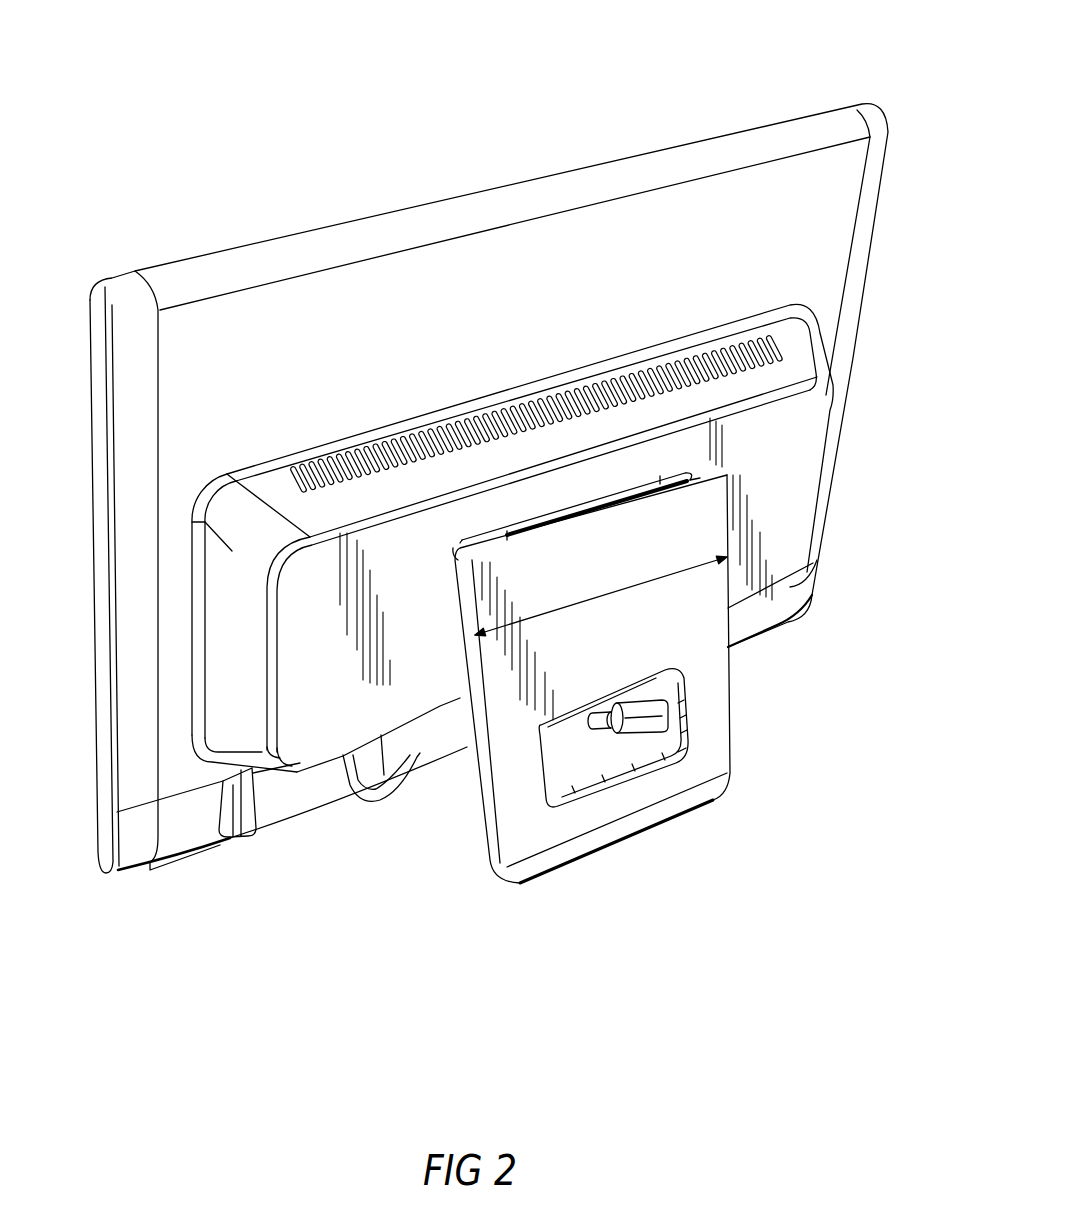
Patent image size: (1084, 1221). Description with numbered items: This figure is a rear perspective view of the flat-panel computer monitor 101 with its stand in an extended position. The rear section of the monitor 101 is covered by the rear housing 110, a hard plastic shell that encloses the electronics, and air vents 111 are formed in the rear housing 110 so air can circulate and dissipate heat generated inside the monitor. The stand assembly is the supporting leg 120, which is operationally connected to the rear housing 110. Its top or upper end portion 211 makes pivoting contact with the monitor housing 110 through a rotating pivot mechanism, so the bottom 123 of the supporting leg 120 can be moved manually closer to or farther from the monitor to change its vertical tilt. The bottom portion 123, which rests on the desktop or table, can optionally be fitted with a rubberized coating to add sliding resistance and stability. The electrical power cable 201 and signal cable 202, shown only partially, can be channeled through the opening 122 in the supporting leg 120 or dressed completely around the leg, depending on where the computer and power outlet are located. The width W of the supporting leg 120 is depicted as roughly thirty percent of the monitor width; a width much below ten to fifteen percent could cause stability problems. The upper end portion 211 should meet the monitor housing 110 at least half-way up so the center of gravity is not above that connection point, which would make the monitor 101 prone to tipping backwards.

The flat-panel computer monitor 101 is at (660, 147).
The rear housing 110 is at (272, 482).
The air vents 111 is at (530, 417).
The supporting leg 120 is at (614, 714).
The opening 122 is at (593, 770).
The bottom portion of supporting leg 123 is at (527, 872).
The electrical power cable 201 is at (637, 740).
The signal cable 202 is at (413, 790).
The upper end portion of supporting leg 211 is at (603, 493).
The width of supporting leg W is at (637, 583).